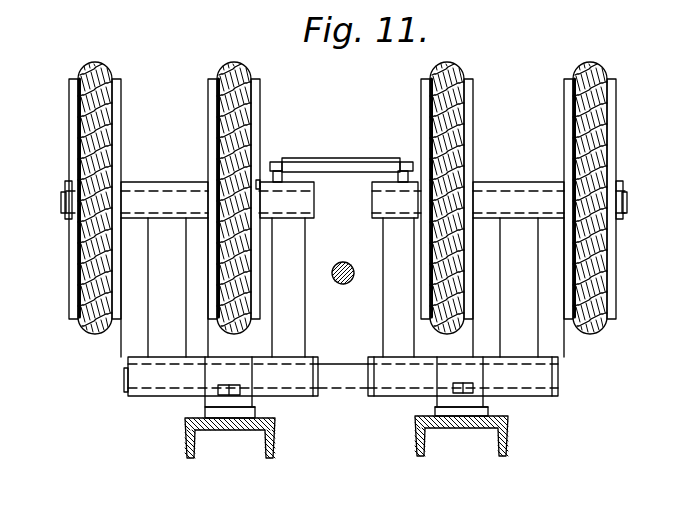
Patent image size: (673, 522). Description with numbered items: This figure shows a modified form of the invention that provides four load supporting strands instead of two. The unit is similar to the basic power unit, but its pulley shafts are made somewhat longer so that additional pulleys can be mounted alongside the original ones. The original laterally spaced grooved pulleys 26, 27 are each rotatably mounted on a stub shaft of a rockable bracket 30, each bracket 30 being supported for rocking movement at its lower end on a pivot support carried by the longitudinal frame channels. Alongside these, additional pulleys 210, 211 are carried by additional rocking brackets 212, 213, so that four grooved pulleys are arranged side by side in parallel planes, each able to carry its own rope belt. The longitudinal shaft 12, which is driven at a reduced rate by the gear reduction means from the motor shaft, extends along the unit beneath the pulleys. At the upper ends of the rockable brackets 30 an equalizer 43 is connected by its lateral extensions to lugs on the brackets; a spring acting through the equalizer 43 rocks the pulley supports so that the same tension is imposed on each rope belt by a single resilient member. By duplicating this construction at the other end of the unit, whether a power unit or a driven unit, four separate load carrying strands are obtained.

The additional pulley 210 is at (72, 100).
The grooved pulley 26 is at (210, 90).
The grooved pulley 27 is at (466, 87).
The additional pulley 211 is at (614, 96).
The equalizer 43 is at (332, 167).
The longitudinal shaft 12 is at (341, 263).
The rockable bracket 30 is at (390, 297).
The additional rocking bracket 212 is at (158, 335).
The additional rocking bracket 213 is at (527, 317).